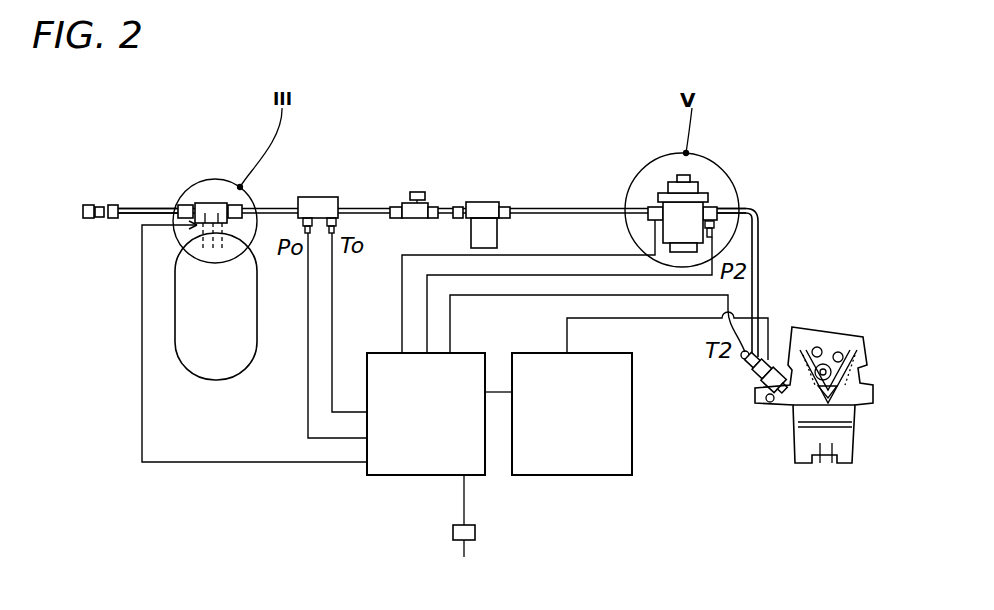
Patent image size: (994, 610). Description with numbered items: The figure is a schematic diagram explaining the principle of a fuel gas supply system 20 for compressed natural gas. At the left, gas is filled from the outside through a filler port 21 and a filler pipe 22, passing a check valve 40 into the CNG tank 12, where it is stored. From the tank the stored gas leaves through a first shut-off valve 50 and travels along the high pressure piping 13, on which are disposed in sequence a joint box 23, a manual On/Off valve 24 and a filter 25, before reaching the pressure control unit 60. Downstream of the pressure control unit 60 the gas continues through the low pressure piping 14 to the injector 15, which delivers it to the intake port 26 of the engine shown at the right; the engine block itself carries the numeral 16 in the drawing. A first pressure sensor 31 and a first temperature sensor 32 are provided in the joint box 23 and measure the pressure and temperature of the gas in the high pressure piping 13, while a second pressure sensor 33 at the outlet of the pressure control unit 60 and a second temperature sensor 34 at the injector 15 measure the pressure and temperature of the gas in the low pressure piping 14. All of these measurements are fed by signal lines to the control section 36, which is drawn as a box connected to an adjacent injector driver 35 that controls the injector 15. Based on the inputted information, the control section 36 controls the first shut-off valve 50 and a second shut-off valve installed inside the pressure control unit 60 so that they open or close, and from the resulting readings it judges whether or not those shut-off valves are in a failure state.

The CNG tank 12 is at (223, 380).
The high pressure piping 13 is at (555, 207).
The low pressure piping 14 is at (758, 277).
The injector 15 is at (750, 378).
The engine 16 is at (860, 357).
The fuel gas supply system 20 is at (266, 506).
The filler port 21 is at (88, 205).
The filler pipe 22 is at (140, 207).
The joint box 23 is at (320, 197).
The manual On/Off valve 24 is at (416, 192).
The filter 25 is at (483, 202).
The intake port 26 is at (778, 393).
The first pressure sensor 31 is at (300, 224).
The first temperature sensor 32 is at (337, 224).
The second pressure sensor 33 is at (717, 228).
The second temperature sensor 34 is at (748, 358).
The injector driver 35 is at (573, 477).
The control section 36 is at (405, 477).
The check valve 40 is at (207, 203).
The first shut-off valve 50 is at (220, 203).
The pressure control unit 60 is at (700, 190).